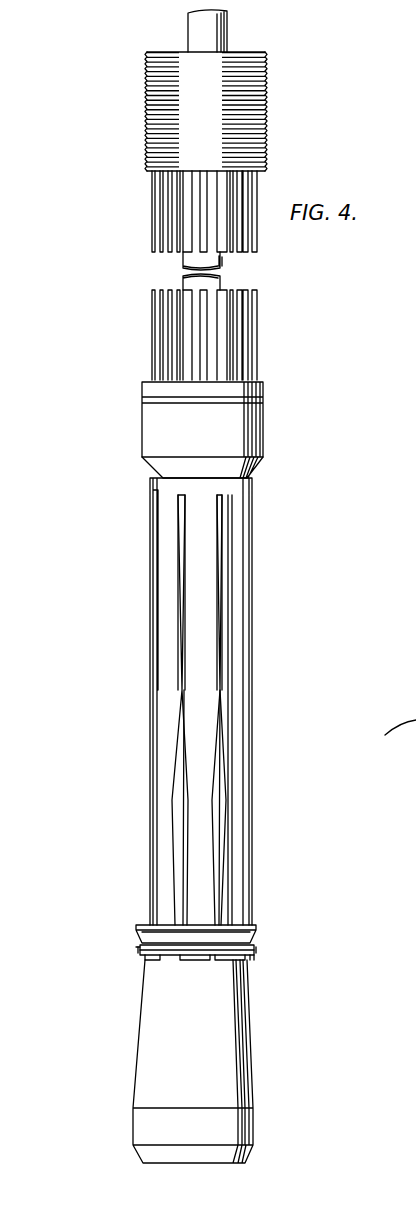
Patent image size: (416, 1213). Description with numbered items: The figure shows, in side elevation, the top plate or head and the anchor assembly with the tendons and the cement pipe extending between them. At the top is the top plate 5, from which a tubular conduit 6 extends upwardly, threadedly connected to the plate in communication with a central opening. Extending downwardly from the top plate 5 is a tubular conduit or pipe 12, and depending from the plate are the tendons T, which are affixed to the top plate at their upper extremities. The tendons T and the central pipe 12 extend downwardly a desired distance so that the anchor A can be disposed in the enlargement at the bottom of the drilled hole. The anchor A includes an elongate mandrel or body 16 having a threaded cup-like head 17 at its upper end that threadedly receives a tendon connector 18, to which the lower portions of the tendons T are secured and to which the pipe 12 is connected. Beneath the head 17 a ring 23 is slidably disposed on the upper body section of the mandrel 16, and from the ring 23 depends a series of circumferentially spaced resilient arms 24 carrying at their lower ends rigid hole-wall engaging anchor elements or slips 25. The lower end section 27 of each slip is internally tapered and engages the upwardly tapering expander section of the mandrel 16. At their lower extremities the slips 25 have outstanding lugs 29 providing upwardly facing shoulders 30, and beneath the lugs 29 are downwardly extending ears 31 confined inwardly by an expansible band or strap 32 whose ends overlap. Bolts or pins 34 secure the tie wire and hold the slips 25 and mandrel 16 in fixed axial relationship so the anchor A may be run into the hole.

The top plate 5 is at (267, 108).
The tubular conduit 6 is at (197, 26).
The tubular conduit or pipe 12 is at (188, 285).
The tendons T is at (255, 292).
The mandrel or body 16 is at (143, 1045).
The cup-like head 17 is at (255, 465).
The tendon connector 18 is at (142, 391).
The ring 23 is at (158, 487).
The resilient arms 24 is at (228, 600).
The anchor elements or slips 25 is at (195, 735).
The lower end section 27 is at (200, 833).
The lugs 29 is at (258, 930).
The upwardly facing shoulders 30 is at (253, 924).
The ears 31 is at (250, 960).
The expansible band or strap 32 is at (192, 957).
The bolts or pins 34 is at (137, 950).
The anchor A is at (270, 643).